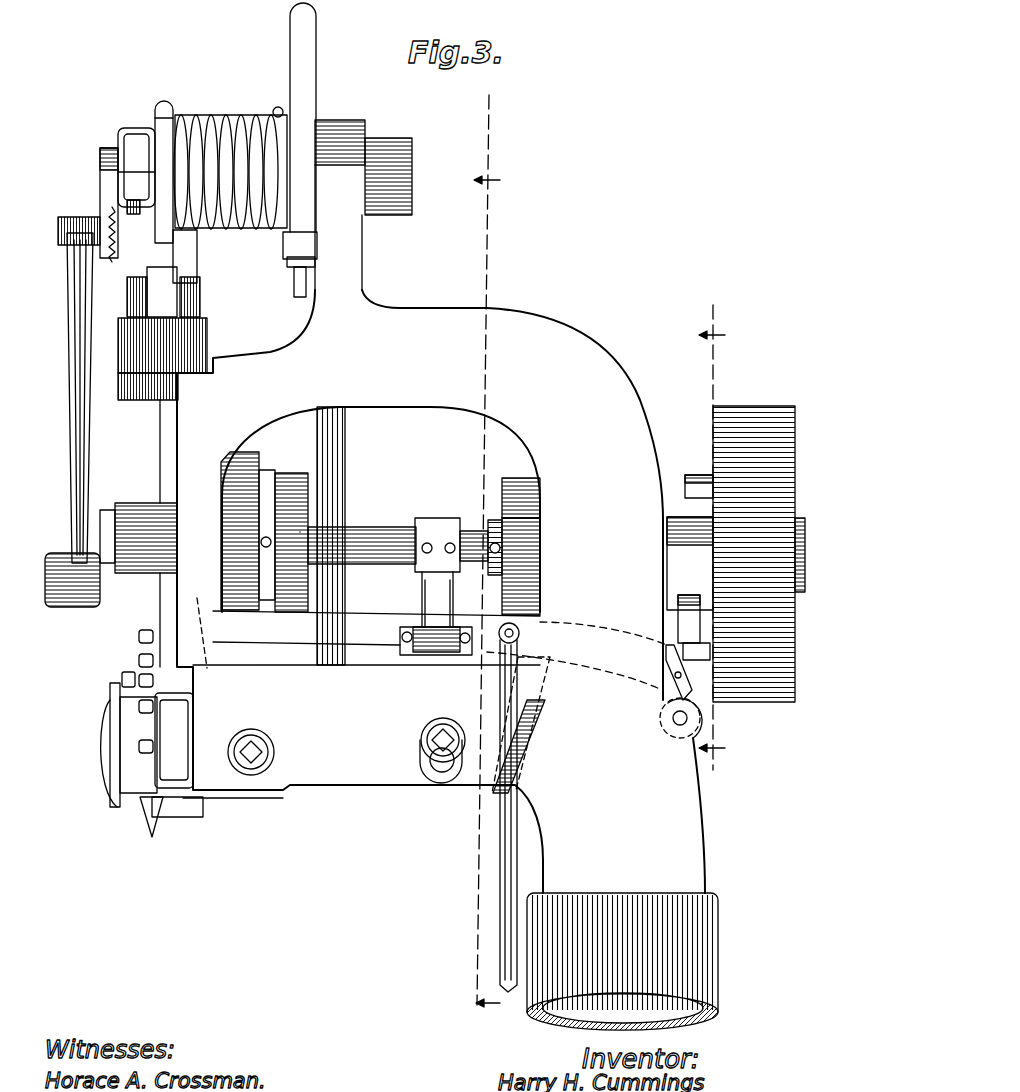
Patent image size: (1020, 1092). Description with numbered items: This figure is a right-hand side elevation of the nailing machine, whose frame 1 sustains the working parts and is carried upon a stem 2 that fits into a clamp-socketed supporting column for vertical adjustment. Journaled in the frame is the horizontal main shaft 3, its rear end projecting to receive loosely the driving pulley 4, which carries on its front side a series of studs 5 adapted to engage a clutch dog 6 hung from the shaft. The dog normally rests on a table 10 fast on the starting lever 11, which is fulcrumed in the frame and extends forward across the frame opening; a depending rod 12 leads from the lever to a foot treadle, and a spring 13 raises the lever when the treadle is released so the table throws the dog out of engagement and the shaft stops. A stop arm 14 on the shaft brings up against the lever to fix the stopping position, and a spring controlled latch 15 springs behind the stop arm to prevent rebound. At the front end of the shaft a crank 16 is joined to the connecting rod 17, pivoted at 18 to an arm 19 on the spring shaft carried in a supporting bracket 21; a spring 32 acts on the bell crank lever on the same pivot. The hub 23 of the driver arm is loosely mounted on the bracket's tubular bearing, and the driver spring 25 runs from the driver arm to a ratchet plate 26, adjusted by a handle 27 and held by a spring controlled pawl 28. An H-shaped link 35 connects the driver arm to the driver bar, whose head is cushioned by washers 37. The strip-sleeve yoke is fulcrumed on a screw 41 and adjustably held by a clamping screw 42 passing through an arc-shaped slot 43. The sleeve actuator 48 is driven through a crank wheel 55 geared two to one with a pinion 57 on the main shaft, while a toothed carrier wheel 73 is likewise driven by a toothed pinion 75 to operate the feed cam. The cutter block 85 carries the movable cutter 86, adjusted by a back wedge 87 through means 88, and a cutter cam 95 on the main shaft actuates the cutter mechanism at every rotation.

The frame 1 is at (432, 591).
The stem 2 is at (708, 949).
The main or drive shaft 3 is at (383, 532).
The driving pulley 4 is at (772, 406).
The studs 5 is at (690, 476).
The clutch dog 6 is at (689, 621).
The table 10 is at (684, 655).
The starting lever 11 is at (432, 644).
The depending rod 12 is at (507, 830).
The spring 13 is at (533, 746).
The stop arm 14 is at (435, 593).
The spring controlled latch 15 is at (437, 655).
The crank 16 is at (106, 590).
The connecting rod 17 is at (90, 435).
The pivot 18 is at (62, 246).
The arm 19 is at (103, 189).
The supporting bracket 21 is at (343, 245).
The hub 23 is at (175, 118).
The driver spring 25 is at (252, 114).
The ratchet plate 26 is at (303, 147).
The handle 27 is at (309, 39).
The spring controlled pawl 28 is at (298, 242).
The spring 32 is at (112, 262).
The H-shaped link 35 is at (180, 260).
The cushioning washers 37 is at (208, 342).
The screw 41 is at (252, 760).
The clamping screw 42 is at (423, 746).
The arc-shaped slot 43 is at (440, 768).
The sleeve actuator 48 is at (345, 438).
The crank wheel 55 is at (292, 474).
The pinion 57 is at (300, 532).
The toothed carrier wheel 73 is at (527, 486).
The toothed pinion 75 is at (527, 541).
The cutter block 85 is at (108, 712).
The movable cutter 86 is at (128, 771).
The back wedge 87 is at (114, 739).
The wedge adjusting means 88 is at (122, 677).
The cutter cam 95 is at (237, 541).